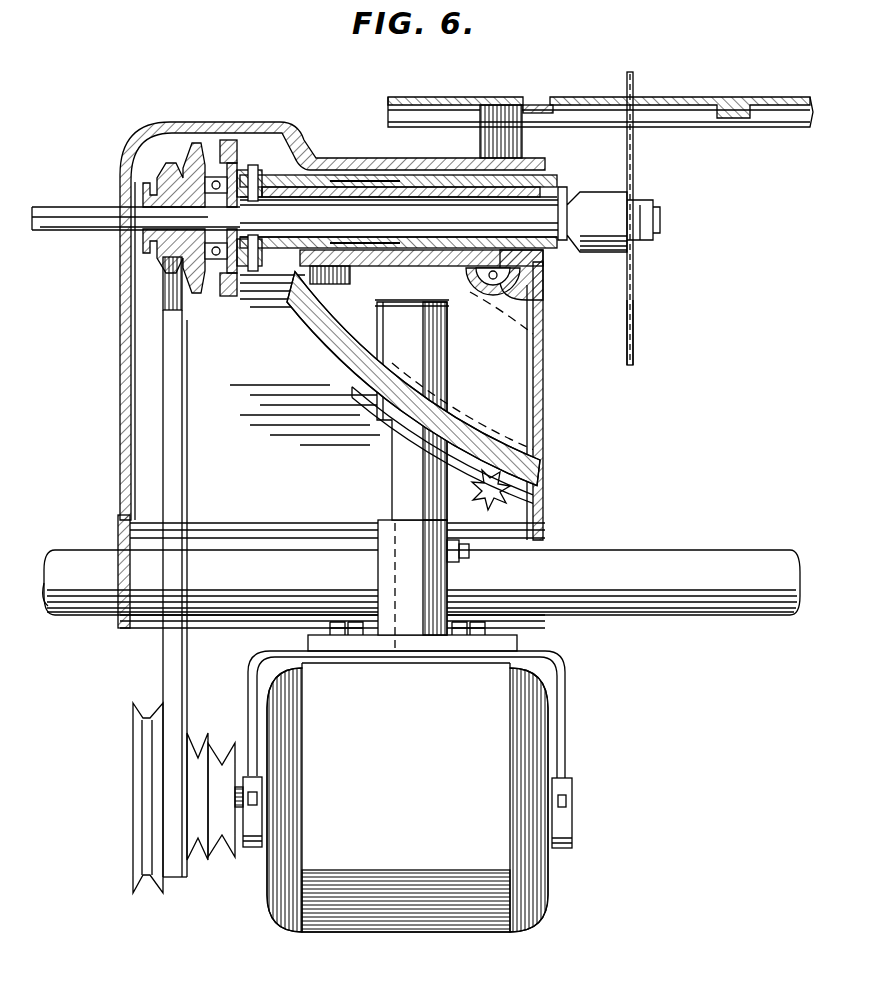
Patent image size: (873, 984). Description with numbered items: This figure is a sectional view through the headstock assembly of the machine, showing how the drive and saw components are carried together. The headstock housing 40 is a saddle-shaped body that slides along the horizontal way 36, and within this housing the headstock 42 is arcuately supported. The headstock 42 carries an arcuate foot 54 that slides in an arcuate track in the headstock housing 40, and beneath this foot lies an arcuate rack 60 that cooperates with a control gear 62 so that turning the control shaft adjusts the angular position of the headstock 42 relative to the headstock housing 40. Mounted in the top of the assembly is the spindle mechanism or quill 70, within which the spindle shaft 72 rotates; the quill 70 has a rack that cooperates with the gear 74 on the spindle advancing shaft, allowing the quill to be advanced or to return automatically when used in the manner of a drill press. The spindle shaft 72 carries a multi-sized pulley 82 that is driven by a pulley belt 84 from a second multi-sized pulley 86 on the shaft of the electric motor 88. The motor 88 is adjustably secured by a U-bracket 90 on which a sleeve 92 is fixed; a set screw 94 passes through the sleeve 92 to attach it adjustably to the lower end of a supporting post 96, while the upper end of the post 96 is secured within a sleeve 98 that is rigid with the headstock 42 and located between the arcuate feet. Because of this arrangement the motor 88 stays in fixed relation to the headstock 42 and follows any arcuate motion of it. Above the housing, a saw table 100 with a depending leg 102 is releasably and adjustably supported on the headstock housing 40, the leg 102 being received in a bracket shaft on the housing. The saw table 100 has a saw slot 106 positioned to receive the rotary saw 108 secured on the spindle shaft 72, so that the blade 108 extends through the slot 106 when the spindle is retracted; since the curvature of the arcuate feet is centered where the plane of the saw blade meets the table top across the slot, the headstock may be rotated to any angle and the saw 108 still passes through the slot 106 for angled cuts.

The way 36 is at (658, 612).
The headstock housing 40 is at (179, 121).
The headstock 42 is at (540, 408).
The arcuate foot 54 is at (508, 464).
The arcuate rack 60 is at (296, 302).
The control gear 62 is at (533, 500).
The quill 70 is at (309, 186).
The spindle shaft 72 is at (527, 213).
The gear 74 is at (493, 289).
The multi-sized pulley 82 is at (152, 182).
The pulley belt 84 is at (187, 506).
The multi-sized pulley 86 is at (133, 810).
The electric motor 88 is at (388, 933).
The U-bracket 90 is at (567, 724).
The sleeve 92 is at (378, 570).
The set screw 94 is at (470, 551).
The supporting post 96 is at (392, 485).
The sleeve 98 is at (435, 350).
The saw table 100 is at (700, 97).
The depending leg 102 is at (522, 141).
The saw slot 106 is at (637, 97).
The rotary saw 108 is at (634, 304).